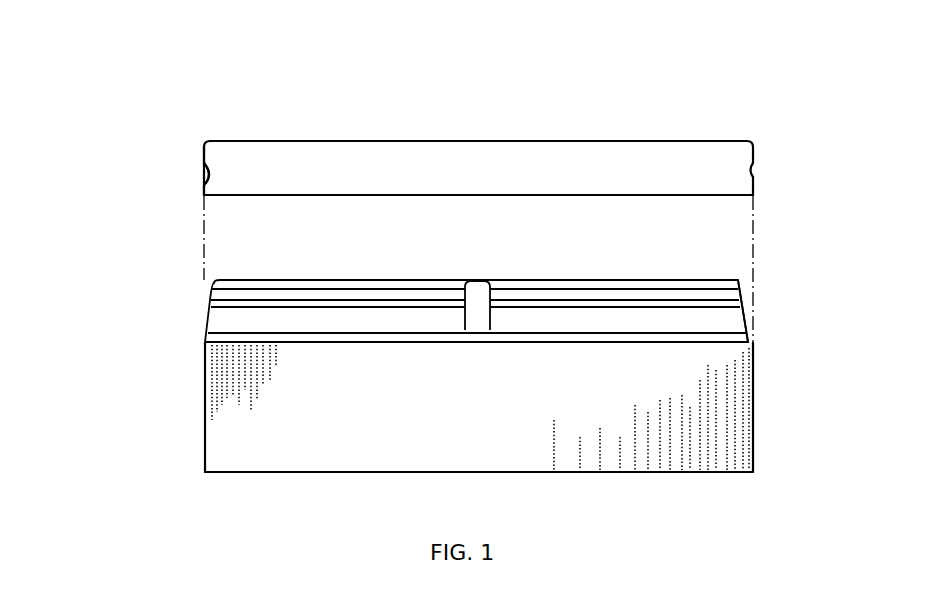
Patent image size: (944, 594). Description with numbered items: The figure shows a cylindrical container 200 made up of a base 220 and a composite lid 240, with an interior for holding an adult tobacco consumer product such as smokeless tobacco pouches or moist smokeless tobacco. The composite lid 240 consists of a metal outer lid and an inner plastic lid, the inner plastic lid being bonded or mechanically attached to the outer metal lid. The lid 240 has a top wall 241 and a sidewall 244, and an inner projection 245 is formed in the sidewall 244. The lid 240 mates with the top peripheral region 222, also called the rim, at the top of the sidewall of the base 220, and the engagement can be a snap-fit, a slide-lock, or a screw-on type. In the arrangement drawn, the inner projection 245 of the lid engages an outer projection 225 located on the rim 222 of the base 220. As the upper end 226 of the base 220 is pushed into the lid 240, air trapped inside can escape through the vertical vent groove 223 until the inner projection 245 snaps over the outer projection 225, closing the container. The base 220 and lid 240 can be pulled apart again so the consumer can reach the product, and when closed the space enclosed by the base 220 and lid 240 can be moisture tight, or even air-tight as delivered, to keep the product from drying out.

The cylindrical container 200 is at (165, 64).
The base 220 is at (206, 402).
The top peripheral region 222 is at (218, 320).
The vertical vent groove 223 is at (480, 287).
The outer projection 225 is at (735, 305).
The upper end 226 is at (652, 280).
The composite lid 240 is at (204, 163).
The top wall 241 is at (292, 140).
The sidewall 244 is at (202, 186).
The inner projection 245 is at (218, 180).